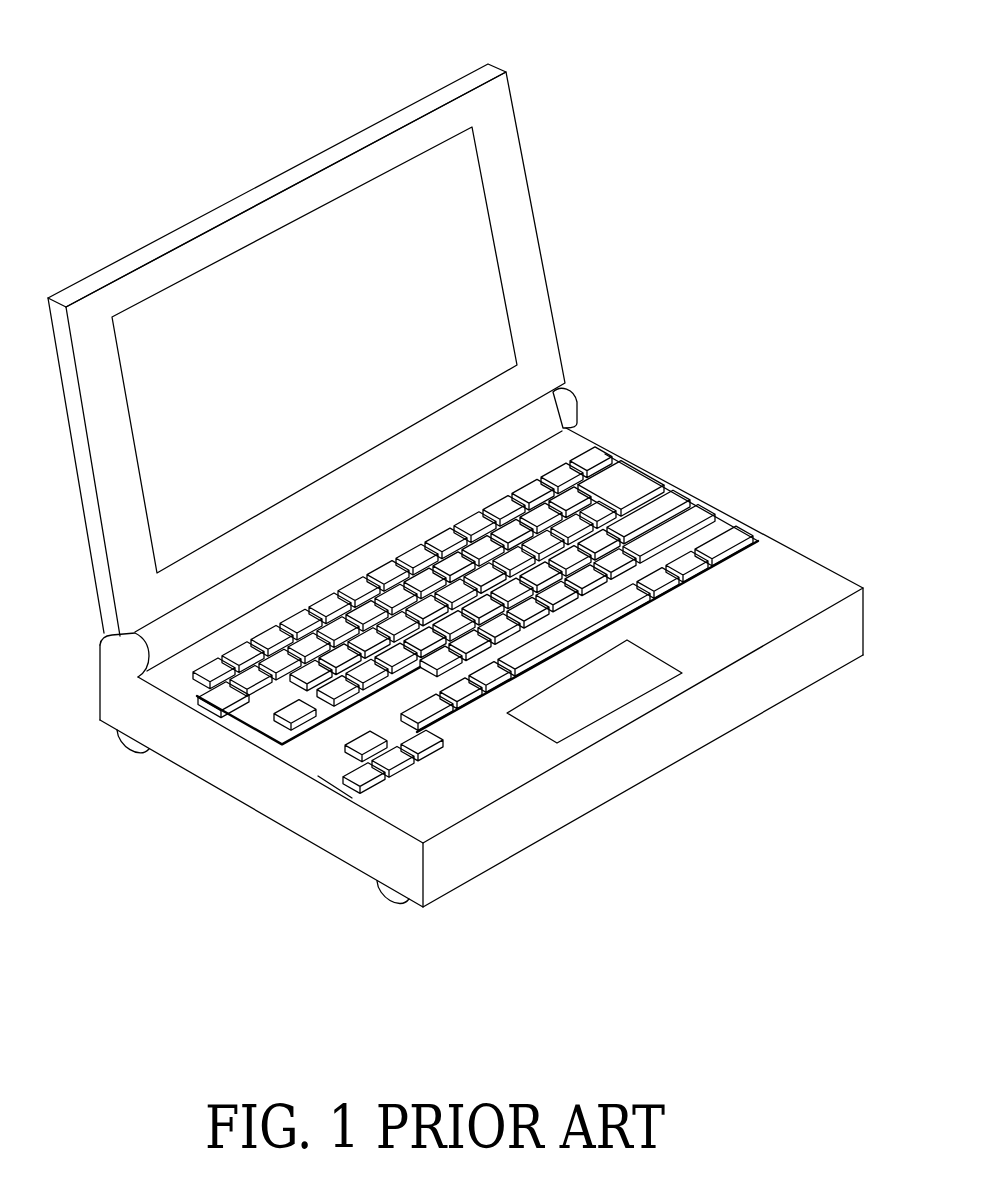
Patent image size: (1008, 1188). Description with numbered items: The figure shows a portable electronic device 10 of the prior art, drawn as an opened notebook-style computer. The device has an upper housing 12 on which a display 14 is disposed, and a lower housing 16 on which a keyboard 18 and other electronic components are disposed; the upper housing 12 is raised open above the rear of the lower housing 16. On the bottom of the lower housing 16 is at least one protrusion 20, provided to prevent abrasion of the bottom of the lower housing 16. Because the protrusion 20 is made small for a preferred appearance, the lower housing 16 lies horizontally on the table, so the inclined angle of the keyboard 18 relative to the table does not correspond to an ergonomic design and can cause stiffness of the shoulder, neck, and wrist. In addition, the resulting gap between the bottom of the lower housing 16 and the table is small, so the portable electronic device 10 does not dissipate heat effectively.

The portable electronic device 10 is at (798, 88).
The upper housing 12 is at (342, 350).
The display 14 is at (485, 277).
The lower housing 16 is at (790, 560).
The keyboard 18 is at (696, 466).
The protrusion 20 is at (137, 747).